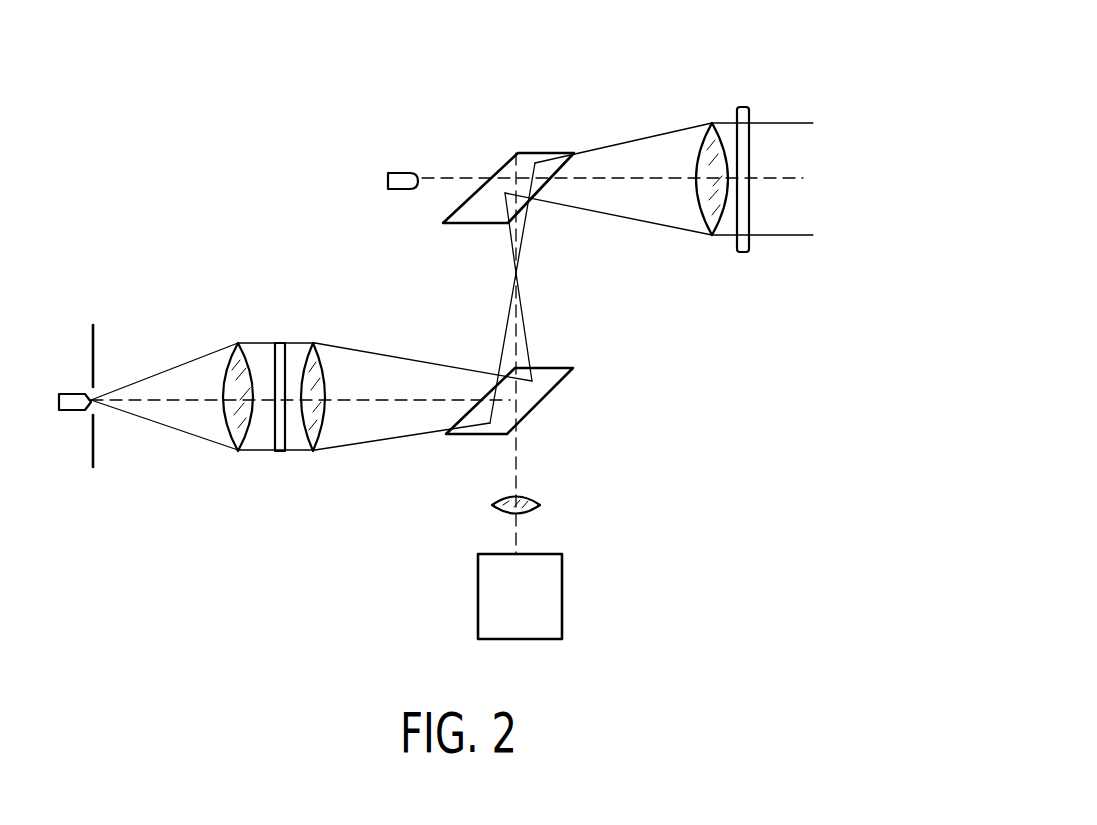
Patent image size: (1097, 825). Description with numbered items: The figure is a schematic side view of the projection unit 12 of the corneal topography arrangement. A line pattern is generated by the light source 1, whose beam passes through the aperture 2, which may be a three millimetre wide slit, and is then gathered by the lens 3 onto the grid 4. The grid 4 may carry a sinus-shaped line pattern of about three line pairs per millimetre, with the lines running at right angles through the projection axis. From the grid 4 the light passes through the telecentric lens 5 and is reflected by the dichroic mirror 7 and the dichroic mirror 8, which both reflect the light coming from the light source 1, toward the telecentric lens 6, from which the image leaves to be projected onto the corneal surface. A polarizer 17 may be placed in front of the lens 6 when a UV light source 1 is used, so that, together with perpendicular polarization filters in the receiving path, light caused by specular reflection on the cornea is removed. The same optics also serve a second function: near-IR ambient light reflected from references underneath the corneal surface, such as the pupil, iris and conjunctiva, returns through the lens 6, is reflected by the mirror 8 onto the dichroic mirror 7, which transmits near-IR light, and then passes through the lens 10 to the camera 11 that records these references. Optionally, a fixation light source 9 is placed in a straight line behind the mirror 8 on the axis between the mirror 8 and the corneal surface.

The light source 1 is at (77, 394).
The aperture 2 is at (97, 436).
The lens 3 is at (228, 442).
The grid 4 is at (274, 441).
The telecentric lens 5 is at (308, 441).
The telecentric lens 6 is at (700, 143).
The dichroic mirror 7 is at (552, 398).
The dichroic mirror 8 is at (503, 162).
The fixation light source 9 is at (405, 171).
The lens 10 is at (536, 500).
The camera 11 is at (562, 603).
The projection unit 12 is at (307, 255).
The polarizer 17 is at (750, 116).